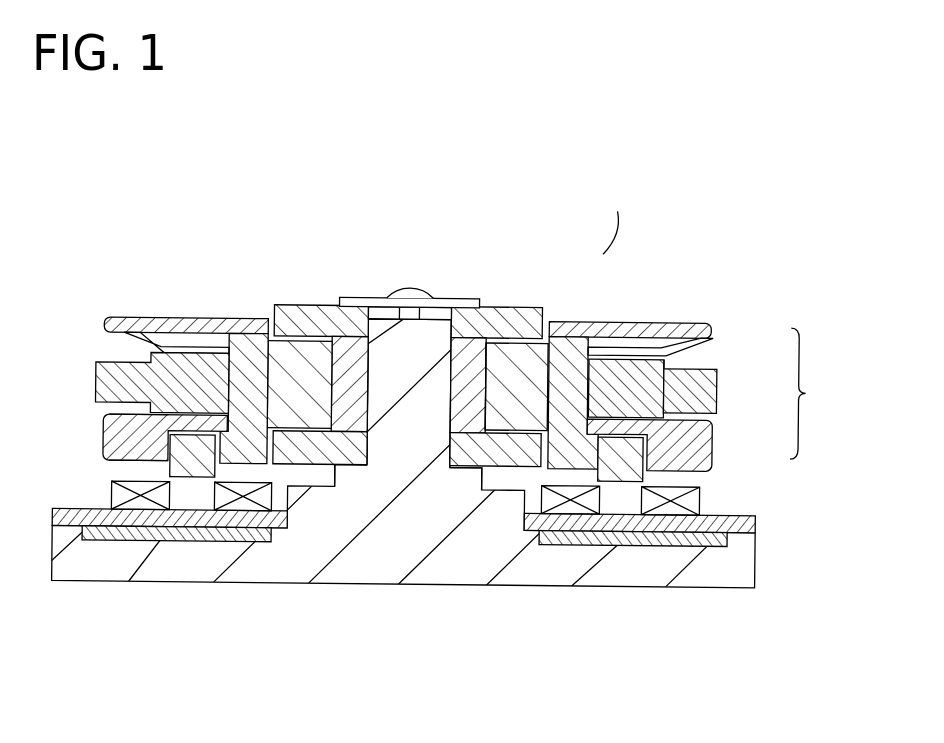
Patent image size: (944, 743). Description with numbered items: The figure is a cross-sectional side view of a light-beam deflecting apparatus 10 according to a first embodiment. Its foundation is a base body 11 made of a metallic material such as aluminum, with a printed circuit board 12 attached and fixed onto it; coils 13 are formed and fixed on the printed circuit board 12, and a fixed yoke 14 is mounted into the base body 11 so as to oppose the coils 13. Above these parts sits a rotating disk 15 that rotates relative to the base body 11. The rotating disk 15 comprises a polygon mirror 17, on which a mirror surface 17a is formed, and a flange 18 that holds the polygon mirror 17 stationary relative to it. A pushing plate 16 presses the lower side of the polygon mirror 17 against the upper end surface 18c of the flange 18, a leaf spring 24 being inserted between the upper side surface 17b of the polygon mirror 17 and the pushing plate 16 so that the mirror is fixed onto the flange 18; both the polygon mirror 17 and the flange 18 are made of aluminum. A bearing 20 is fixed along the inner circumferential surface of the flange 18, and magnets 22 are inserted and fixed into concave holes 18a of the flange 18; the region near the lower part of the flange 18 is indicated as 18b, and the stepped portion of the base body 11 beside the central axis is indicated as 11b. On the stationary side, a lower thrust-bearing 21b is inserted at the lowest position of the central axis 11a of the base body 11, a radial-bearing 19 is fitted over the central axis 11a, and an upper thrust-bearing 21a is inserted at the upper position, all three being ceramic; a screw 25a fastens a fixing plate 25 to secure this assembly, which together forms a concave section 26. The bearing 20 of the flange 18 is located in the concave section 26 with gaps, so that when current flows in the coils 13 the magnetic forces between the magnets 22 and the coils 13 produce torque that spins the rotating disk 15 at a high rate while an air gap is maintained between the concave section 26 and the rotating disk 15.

The light-beam deflecting apparatus 10 is at (598, 257).
The base body 11 is at (335, 610).
The central axis 11a is at (377, 323).
The stepped portion of base 11b is at (465, 478).
The printed circuit board 12 is at (705, 530).
The coils 13 is at (700, 500).
The fixed yoke 14 is at (676, 542).
The rotating disk 15 is at (819, 394).
The pushing plate 16 is at (697, 333).
The polygon mirror 17 is at (706, 380).
The mirror surface 17a is at (716, 398).
The upper side surface 17b is at (670, 366).
The flange 18 is at (716, 432).
The concave holes 18a is at (170, 467).
The lower portion of yoke ring 18b is at (270, 398).
The upper end surface 18c is at (123, 408).
The radial-bearing 19 is at (466, 343).
The bearing 20 is at (229, 318).
The upper thrust-bearing 21a is at (285, 307).
The lower thrust-bearing 21b is at (521, 455).
The magnets 22 is at (644, 473).
The leaf spring 24 is at (153, 350).
The fixing plate 25 is at (443, 297).
The screw 25a is at (403, 283).
The concave section 26 is at (497, 400).